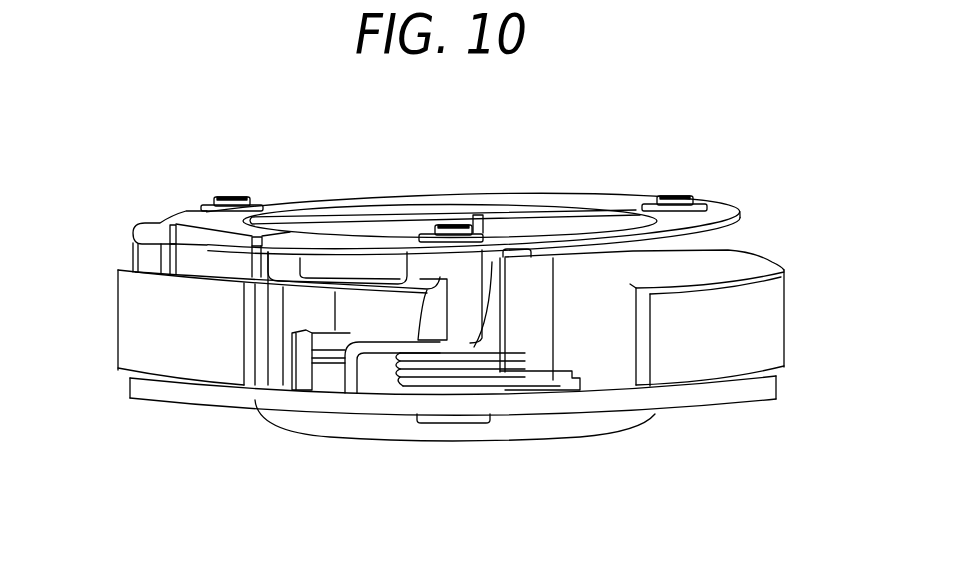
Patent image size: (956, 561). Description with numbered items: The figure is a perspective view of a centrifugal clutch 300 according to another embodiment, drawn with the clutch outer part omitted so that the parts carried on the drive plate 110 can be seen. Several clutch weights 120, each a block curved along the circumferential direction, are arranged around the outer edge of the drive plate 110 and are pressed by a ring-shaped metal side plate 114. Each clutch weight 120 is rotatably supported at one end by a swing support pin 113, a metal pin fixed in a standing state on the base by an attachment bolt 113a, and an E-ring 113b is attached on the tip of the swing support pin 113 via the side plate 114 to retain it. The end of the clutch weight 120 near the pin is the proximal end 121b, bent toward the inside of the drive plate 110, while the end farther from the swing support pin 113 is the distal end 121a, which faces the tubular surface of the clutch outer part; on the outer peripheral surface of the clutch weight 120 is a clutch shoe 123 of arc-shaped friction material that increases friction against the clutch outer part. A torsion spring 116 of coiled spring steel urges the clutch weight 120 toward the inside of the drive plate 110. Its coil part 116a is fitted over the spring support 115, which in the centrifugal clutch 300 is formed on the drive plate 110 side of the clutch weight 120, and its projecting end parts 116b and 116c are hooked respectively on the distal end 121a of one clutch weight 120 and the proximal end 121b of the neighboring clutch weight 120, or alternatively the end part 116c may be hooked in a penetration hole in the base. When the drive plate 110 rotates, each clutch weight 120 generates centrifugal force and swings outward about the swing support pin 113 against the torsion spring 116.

The centrifugal clutch 300 is at (122, 107).
The drive plate 110 is at (137, 402).
The swing support pin 113 is at (453, 225).
The attachment bolt 113a is at (472, 424).
The E-ring 113b is at (258, 204).
The side plate 114 is at (188, 220).
The spring support 115 is at (482, 228).
The torsion spring 116 is at (362, 436).
The coil part 116a is at (400, 368).
The one end part of the torsion spring 116b is at (492, 388).
The other end part of the torsion spring 116c is at (342, 371).
The clutch weight 120 is at (758, 261).
The distal end 121a is at (553, 362).
The proximal end 121b is at (273, 348).
The clutch shoe 123 is at (125, 321).